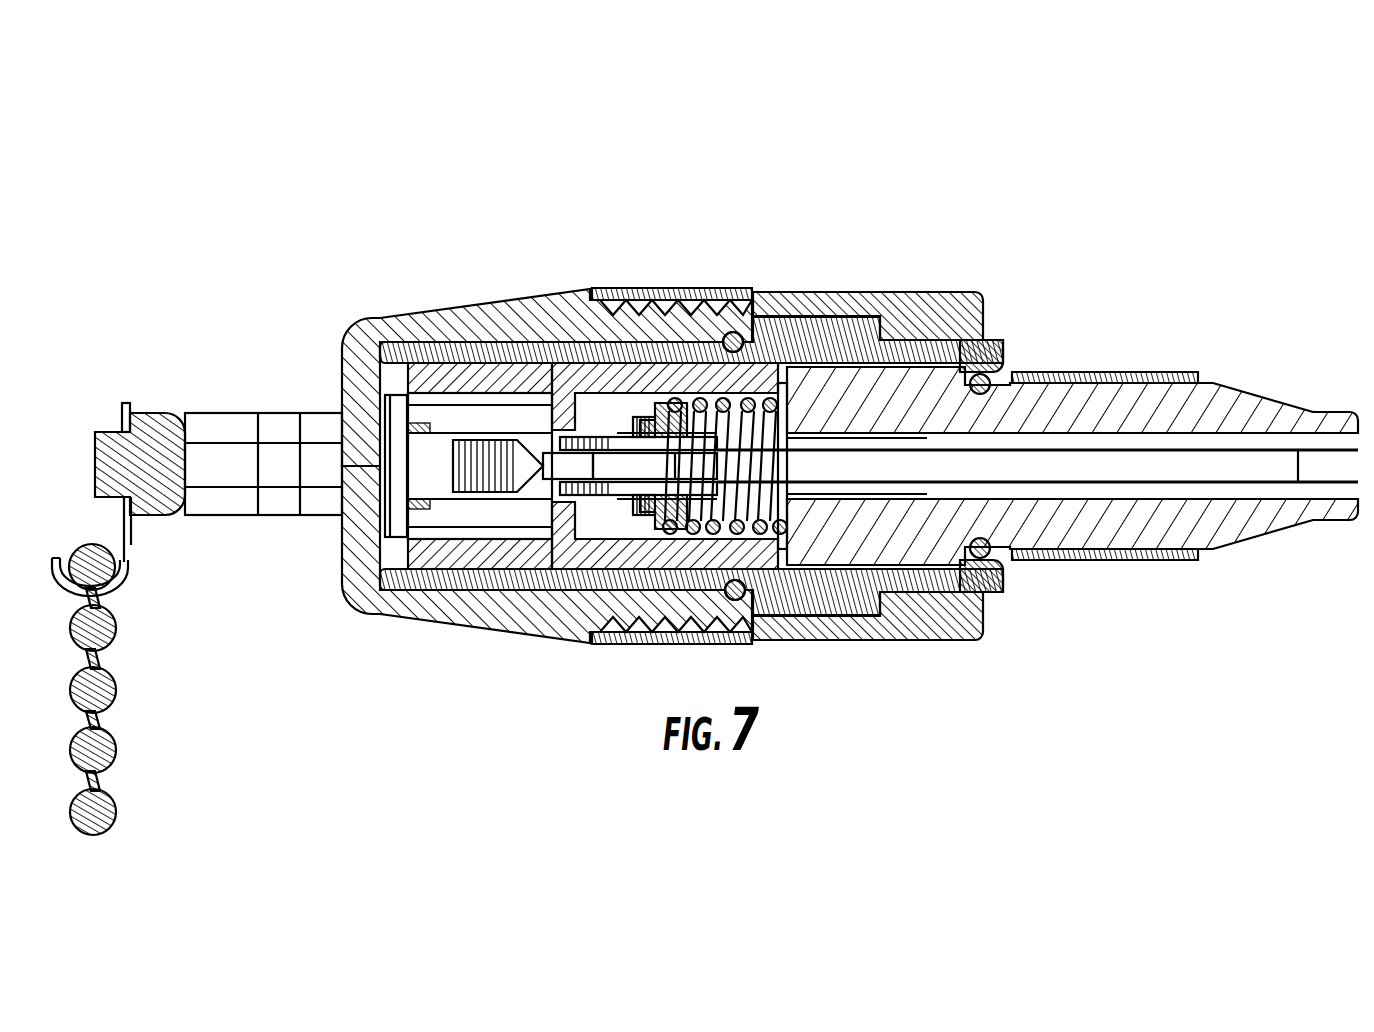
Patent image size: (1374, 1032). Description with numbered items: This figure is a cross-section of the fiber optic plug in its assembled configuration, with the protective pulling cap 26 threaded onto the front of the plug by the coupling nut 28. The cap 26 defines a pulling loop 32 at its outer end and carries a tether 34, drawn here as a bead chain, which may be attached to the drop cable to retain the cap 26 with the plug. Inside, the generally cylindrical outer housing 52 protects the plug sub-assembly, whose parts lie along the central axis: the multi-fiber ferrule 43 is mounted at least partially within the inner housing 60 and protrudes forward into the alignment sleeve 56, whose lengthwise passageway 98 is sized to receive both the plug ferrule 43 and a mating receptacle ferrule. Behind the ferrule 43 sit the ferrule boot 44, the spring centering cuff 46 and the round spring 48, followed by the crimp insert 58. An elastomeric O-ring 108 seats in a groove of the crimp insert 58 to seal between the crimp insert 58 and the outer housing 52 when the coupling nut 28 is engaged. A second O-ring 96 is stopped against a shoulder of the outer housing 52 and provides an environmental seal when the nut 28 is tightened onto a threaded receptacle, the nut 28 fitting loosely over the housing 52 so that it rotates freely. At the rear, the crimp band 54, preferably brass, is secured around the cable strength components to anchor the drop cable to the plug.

The protective pulling cap 26 is at (473, 323).
The coupling nut 28 is at (955, 300).
The pulling loop 32 is at (190, 413).
The tether 34 is at (118, 822).
The multi-fiber ferrule 43 is at (467, 456).
The ferrule boot 44 is at (623, 430).
The spring centering cuff 46 is at (665, 398).
The round spring 48 is at (752, 398).
The outer housing 52 is at (790, 350).
The crimp band 54 is at (1090, 368).
The alignment sleeve 56 is at (530, 378).
The crimp insert 58 is at (850, 393).
The inner housing 60 is at (640, 372).
The O-ring 96 is at (737, 598).
The lengthwise passageway 98 is at (435, 473).
The O-ring 108 is at (987, 600).